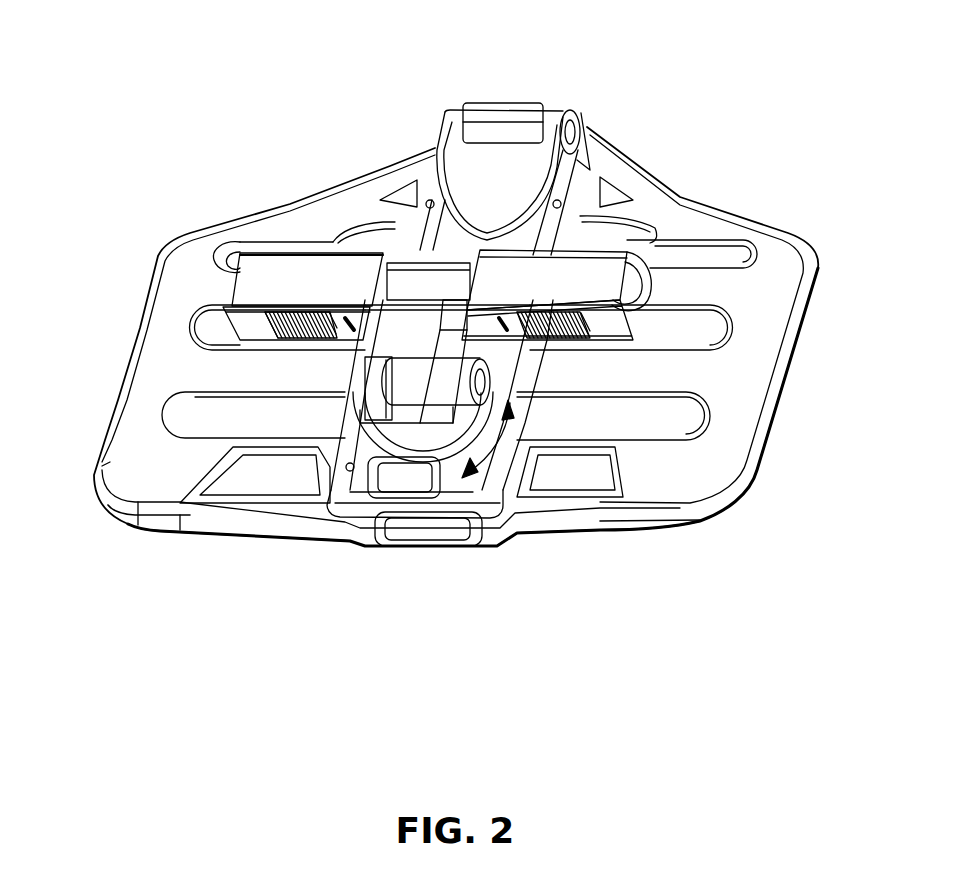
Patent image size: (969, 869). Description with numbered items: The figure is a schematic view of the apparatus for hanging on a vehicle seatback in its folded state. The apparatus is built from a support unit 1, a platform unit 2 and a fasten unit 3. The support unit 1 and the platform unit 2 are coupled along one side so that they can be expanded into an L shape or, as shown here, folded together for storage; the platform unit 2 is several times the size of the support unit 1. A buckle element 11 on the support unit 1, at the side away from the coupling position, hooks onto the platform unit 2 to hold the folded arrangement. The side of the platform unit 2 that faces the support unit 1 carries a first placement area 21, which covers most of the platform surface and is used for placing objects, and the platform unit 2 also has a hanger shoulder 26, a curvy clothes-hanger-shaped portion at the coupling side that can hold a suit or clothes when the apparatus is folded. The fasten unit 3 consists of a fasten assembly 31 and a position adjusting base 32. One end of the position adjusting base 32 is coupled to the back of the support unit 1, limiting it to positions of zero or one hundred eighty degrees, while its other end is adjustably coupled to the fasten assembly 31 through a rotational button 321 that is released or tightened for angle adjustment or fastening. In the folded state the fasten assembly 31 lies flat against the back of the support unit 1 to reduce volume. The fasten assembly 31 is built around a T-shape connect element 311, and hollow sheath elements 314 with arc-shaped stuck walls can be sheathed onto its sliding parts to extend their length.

The support unit 1 is at (427, 247).
The platform unit 2 is at (120, 392).
The fasten unit 3 is at (479, 483).
The buckle element 11 is at (413, 525).
The first placement area 21 is at (193, 287).
The hanger shoulder 26 is at (687, 192).
The fasten assembly 31 is at (479, 459).
The position adjusting base 32 is at (522, 518).
The T-shape connect element 311 is at (413, 317).
The sheath element 314 is at (297, 290).
The rotational button 321 is at (457, 383).